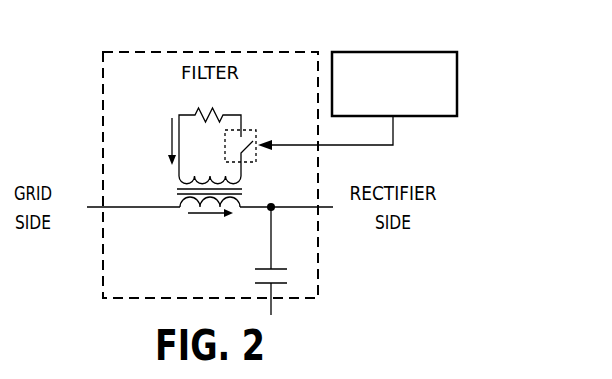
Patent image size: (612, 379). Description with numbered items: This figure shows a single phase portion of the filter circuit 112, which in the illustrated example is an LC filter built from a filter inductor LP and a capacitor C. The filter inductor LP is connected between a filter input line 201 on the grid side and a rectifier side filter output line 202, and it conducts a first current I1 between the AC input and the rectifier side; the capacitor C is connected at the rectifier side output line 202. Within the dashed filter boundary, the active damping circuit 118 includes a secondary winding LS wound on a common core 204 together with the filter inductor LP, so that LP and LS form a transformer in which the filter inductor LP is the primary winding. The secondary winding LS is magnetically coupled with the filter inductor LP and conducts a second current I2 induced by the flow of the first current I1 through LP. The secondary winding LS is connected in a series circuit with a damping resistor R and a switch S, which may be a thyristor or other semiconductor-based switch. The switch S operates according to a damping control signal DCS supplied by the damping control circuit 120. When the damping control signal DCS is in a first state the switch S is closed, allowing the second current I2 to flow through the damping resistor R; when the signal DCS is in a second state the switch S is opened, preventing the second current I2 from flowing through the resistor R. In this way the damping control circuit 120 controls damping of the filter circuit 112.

The filter circuit 112 is at (211, 52).
The active damping circuit 118 is at (194, 128).
The damping control circuit 120 is at (392, 52).
The filter input line 201 is at (149, 207).
The rectifier side filter output line 202 is at (302, 207).
The common core 204 is at (177, 189).
The damping resistor R is at (210, 96).
The secondary winding LS is at (210, 167).
The filter inductor LP is at (210, 216).
The capacitor C is at (262, 261).
The switch S is at (256, 130).
The first current I1 is at (192, 214).
The second current I2 is at (172, 140).
The damping control signal DCS is at (394, 128).